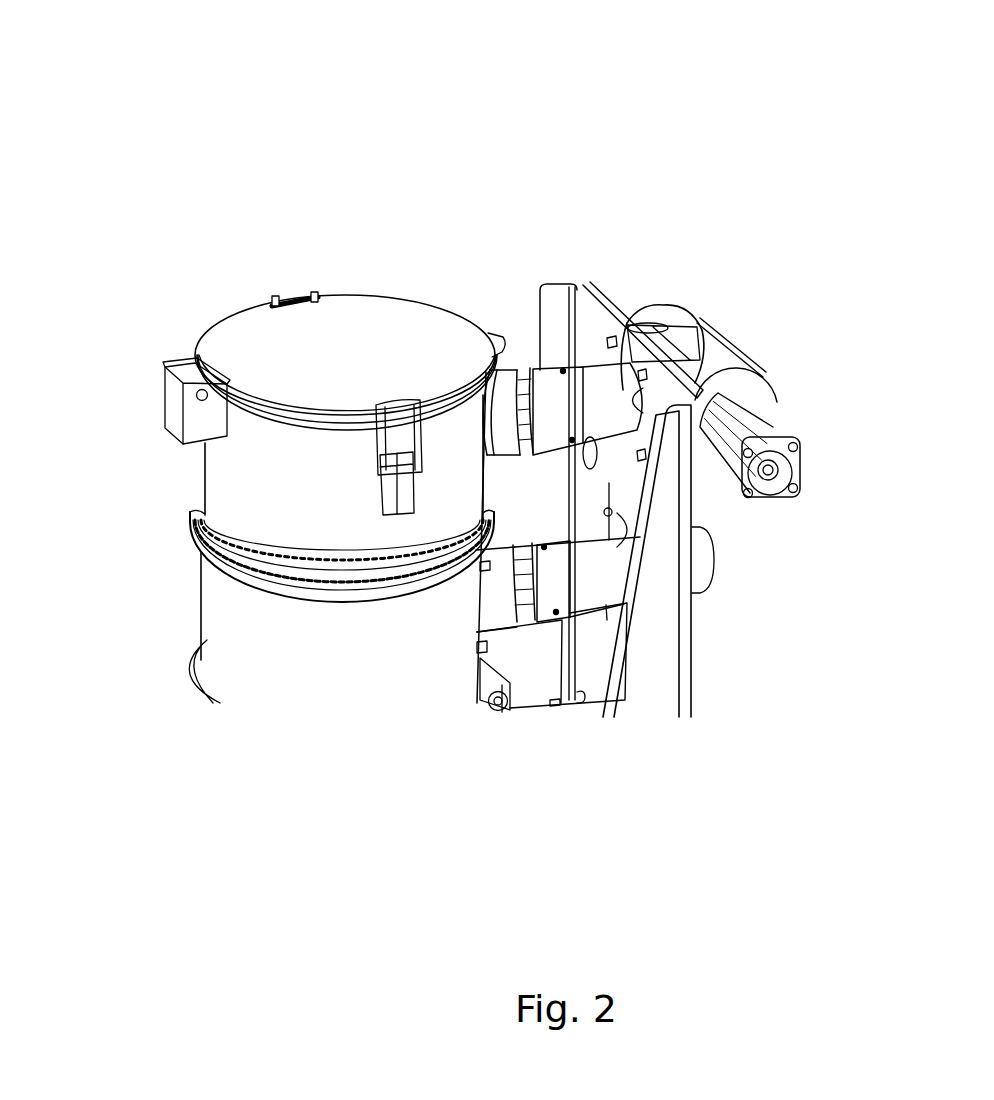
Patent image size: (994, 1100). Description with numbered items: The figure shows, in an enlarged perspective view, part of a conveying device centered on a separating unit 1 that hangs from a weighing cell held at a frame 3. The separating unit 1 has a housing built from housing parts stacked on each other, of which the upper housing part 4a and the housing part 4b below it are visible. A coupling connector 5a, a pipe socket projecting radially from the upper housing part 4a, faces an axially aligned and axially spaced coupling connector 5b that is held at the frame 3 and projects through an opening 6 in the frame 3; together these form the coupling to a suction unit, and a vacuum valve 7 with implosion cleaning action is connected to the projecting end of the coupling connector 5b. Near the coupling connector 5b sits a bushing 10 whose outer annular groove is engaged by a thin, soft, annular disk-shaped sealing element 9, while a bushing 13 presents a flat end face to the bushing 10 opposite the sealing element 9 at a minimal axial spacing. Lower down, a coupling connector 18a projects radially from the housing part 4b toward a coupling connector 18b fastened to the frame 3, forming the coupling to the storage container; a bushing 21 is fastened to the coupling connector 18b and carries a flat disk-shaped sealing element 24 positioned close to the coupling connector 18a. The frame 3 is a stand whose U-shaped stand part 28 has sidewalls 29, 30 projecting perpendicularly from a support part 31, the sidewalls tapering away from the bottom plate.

The separating unit 1 is at (168, 596).
The frame 3 is at (575, 283).
The upper housing part 4a is at (235, 481).
The housing part 4b is at (237, 625).
The coupling connector 5a is at (500, 402).
The coupling connector 5b is at (603, 403).
The opening 6 is at (700, 357).
The vacuum valve 7 is at (765, 452).
The sealing element 9 is at (513, 427).
The bushing 10 is at (537, 410).
The bushing 13 is at (558, 400).
The coupling connector 18a is at (498, 592).
The coupling connector 18b is at (610, 573).
The bushing 21 is at (540, 596).
The sealing element 24 is at (550, 600).
The U-shaped stand part 28 is at (655, 676).
The sidewall 29 is at (556, 305).
The sidewall 30 is at (657, 633).
The support part 31 is at (580, 340).